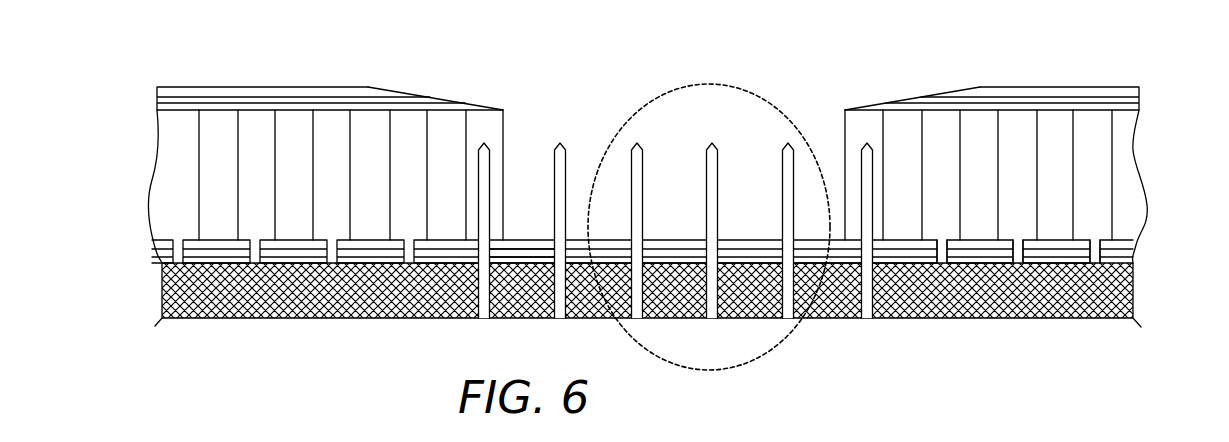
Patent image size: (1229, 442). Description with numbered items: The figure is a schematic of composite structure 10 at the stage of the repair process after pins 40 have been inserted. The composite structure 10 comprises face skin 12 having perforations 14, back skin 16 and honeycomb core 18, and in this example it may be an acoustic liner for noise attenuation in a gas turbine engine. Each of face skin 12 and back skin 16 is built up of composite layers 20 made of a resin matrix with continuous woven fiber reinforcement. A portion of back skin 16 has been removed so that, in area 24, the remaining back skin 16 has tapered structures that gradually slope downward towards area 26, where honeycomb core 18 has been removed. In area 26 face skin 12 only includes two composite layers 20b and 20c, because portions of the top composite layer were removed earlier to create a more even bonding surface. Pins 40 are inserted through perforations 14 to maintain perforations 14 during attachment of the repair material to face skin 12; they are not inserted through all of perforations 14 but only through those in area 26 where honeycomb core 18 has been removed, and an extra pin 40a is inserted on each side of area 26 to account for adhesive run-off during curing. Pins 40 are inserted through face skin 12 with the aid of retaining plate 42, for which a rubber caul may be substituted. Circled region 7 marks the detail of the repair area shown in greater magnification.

The composite structure 10 is at (957, 45).
The detail region 7 is at (733, 88).
The face skin 12 is at (1148, 250).
The perforations 14 is at (1012, 236).
The back skin 16 is at (1147, 96).
The honeycomb core 18 is at (1150, 180).
The composite layers 20 is at (210, 100).
The middle composite layer 20b is at (510, 248).
The composite layer 20c is at (522, 257).
The area 24 is at (462, 86).
The area 26 is at (654, 210).
The pins 40 is at (632, 150).
The extra pin 40a is at (481, 320).
The retaining plate 42 is at (247, 316).